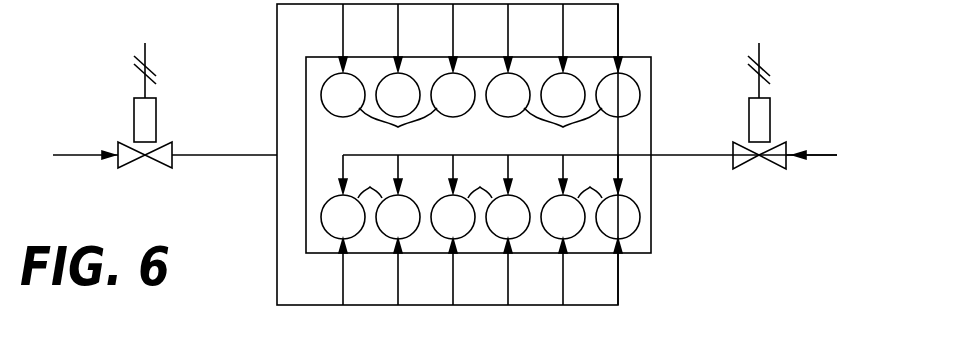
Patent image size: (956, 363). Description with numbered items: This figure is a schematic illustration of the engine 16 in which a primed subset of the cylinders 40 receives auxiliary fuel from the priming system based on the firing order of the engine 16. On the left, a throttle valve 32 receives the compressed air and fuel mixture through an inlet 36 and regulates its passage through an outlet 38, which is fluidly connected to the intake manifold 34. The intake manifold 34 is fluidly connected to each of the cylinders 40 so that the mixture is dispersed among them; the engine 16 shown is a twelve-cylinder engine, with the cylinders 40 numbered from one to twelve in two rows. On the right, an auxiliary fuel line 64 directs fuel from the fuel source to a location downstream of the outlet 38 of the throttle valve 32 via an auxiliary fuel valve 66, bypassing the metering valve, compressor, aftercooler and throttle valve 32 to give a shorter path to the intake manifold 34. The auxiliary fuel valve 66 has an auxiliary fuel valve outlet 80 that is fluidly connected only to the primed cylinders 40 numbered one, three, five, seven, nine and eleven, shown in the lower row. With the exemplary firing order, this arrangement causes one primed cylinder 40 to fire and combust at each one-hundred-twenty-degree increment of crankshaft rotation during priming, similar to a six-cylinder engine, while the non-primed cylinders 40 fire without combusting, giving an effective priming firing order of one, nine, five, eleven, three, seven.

The engine 16 is at (651, 221).
The throttle valve 32 is at (134, 110).
The intake manifold 34 is at (277, 50).
The inlet 36 is at (90, 155).
The outlet 38 is at (250, 155).
The cylinders 40 is at (398, 127).
The auxiliary fuel line 64 is at (820, 155).
The auxiliary fuel valve 66 is at (770, 110).
The auxiliary fuel valve outlet 80 is at (674, 155).